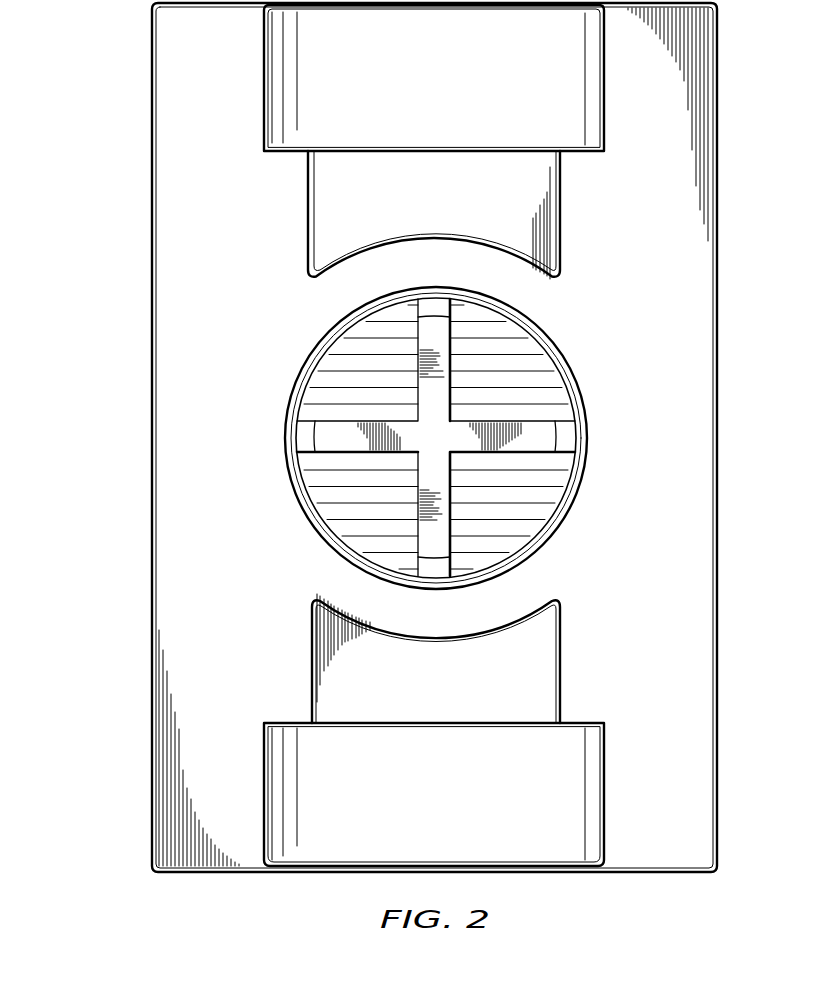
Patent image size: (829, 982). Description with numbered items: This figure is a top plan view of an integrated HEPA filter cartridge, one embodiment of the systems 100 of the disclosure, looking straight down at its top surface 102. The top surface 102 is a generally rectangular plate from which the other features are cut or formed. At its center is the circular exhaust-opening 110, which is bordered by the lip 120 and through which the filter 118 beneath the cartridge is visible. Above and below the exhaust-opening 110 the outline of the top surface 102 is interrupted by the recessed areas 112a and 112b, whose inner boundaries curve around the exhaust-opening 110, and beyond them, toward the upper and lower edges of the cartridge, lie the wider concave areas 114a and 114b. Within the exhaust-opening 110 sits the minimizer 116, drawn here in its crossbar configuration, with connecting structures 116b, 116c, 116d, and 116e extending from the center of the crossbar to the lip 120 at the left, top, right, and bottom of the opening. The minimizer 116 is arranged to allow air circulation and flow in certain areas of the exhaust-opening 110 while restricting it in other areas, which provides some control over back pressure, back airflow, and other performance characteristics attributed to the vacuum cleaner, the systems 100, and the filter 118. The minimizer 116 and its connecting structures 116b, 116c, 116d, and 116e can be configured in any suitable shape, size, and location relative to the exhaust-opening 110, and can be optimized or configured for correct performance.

The system 100 is at (100, 324).
The top surface 102 is at (666, 554).
The exhaust-opening 110 is at (578, 366).
The recessed area 112a is at (458, 698).
The recessed area 112b is at (458, 205).
The concave area 114a is at (458, 812).
The concave area 114b is at (458, 95).
The minimizer 116 is at (340, 440).
The connecting structure 116b is at (307, 438).
The connecting structure 116c is at (437, 303).
The connecting structure 116d is at (561, 438).
The connecting structure 116e is at (438, 566).
The filter 118 is at (345, 360).
The lip 120 is at (585, 412).